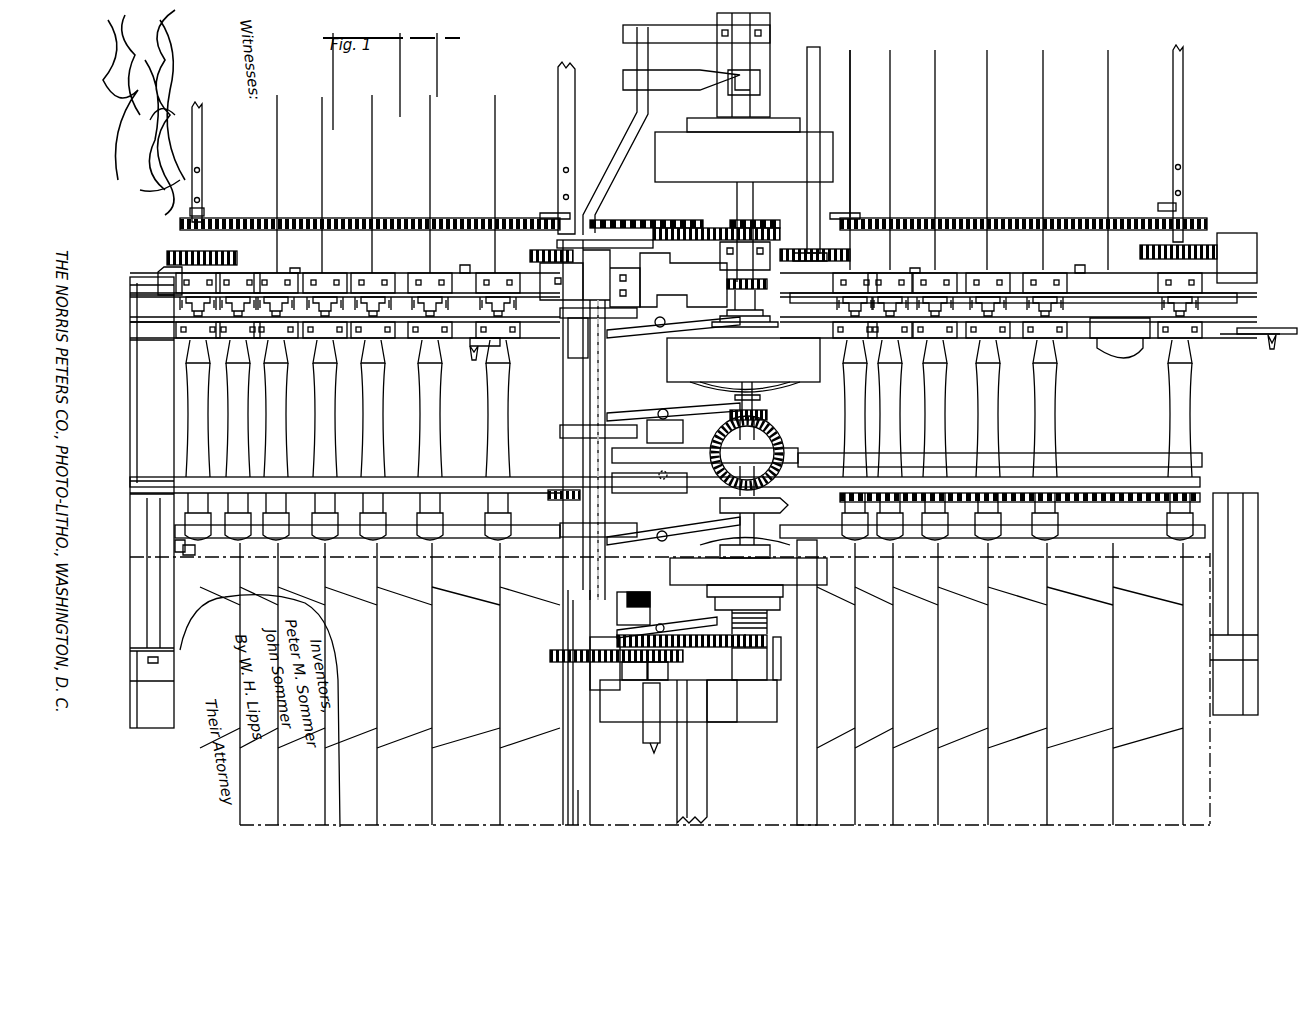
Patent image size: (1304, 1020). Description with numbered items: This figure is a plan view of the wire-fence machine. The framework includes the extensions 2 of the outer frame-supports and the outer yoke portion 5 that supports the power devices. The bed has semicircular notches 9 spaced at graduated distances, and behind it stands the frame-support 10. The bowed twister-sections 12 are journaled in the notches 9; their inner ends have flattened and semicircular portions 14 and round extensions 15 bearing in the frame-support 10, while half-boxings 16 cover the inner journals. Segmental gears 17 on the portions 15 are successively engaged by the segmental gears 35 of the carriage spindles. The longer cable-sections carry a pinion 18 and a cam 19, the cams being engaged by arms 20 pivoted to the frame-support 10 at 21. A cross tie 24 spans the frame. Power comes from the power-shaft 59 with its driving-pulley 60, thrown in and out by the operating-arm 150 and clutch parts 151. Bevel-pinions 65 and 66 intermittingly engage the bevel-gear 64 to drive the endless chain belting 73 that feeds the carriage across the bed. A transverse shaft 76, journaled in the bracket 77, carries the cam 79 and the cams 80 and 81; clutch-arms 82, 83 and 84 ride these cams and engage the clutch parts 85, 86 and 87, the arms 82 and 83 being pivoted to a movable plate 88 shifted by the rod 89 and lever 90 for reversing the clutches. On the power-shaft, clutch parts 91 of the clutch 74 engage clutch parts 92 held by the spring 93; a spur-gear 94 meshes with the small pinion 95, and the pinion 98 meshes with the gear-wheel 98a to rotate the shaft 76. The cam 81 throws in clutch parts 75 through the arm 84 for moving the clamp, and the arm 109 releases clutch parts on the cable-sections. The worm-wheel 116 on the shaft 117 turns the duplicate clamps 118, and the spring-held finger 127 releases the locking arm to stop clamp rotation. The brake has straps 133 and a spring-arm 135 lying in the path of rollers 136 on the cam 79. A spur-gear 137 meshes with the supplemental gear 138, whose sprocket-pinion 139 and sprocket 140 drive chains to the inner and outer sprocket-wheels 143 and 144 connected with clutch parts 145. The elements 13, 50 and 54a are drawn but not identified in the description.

The extensions 2 is at (152, 557).
The outer yoke portion 5 is at (770, 50).
The semicircular notches 9 is at (420, 540).
The frame-support 10 is at (400, 273).
The twister-sections 12 is at (345, 423).
The lower bearing 13 is at (470, 525).
The flattened upper and semicircular portions 14 is at (315, 345).
The round extensions 15 is at (348, 300).
The half-boxings 16 is at (185, 338).
The segmental gears 17 is at (195, 305).
The pinion 18 is at (175, 250).
The cam 19 is at (160, 270).
The arms 20 is at (262, 282).
The pivot 21 is at (295, 268).
The cross tie 24 is at (462, 477).
The segmental gears 35 is at (1237, 298).
The bar 50 is at (470, 346).
The finger 54a is at (505, 360).
The power-shaft 59 is at (745, 195).
The driving-pulley 60 is at (744, 150).
The bevel-gear 64 is at (785, 445).
The bevel-pinion 65 is at (727, 433).
The bevel-pinion 66 is at (718, 468).
The endless chain belting 73 is at (1072, 493).
The clutch 74 is at (748, 561).
The clutch parts 75 is at (743, 365).
The transverse shaft 76 is at (566, 610).
The bracket 77 is at (645, 725).
The cam 79 is at (565, 555).
The cam 80 is at (562, 432).
The cam 81 is at (570, 332).
The clutch-arm 82 is at (632, 545).
The clutch-arm 83 is at (638, 400).
The clutch-arm 84 is at (628, 333).
The clutch part 85 is at (806, 575).
The clutch part 86 is at (762, 401).
The clutch part 87 is at (765, 318).
The movable plate 88 is at (665, 431).
The rod 89 is at (652, 605).
The lever 90 is at (665, 762).
The clutch parts 91 is at (768, 614).
The clutch part 92 is at (791, 658).
The spring 93 is at (767, 628).
The spur-gear 94 is at (678, 663).
The small pinion 95 is at (688, 701).
The pinion 98 is at (645, 660).
The gear-wheel 98a is at (550, 655).
The arm 109 is at (600, 239).
The worm-wheel 116 is at (693, 770).
The shaft 117 is at (568, 705).
The duplicate clamps 118 is at (325, 688).
The spring-held finger 127 is at (640, 625).
The straps 133 is at (754, 505).
The spring-arm 135 is at (649, 482).
The rollers 136 is at (555, 500).
The spur-gear 137 is at (808, 218).
The supplemental gear 138 is at (658, 220).
The sprocket-pinion 139 is at (727, 285).
The sprocket 140 is at (676, 227).
The inner sprocket-wheel 143 is at (205, 210).
The outer sprocket-wheel 144 is at (548, 216).
The clutch parts 145 is at (235, 222).
The operating-arm 150 is at (605, 150).
The clutch parts 151 is at (740, 78).